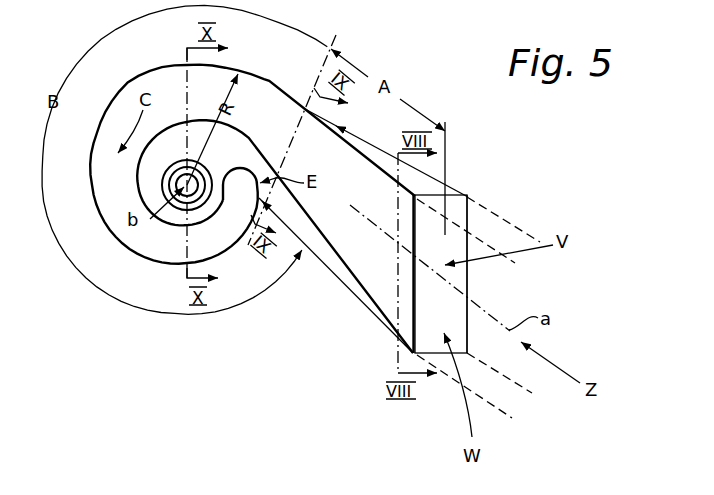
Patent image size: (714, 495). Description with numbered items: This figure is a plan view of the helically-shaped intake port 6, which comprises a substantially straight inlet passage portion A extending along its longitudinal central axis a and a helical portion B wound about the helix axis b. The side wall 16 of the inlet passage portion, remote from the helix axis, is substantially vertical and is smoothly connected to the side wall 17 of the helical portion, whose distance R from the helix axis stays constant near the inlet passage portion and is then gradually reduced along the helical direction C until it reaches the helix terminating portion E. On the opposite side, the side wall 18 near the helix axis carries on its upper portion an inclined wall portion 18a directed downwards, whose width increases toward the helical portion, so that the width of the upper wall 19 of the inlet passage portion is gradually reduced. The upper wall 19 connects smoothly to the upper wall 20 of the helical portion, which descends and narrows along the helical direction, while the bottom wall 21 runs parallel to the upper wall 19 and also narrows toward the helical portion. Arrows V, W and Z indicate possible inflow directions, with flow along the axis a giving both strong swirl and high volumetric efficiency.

The helically-shaped intake port 6 is at (468, 191).
The side wall of the inlet passage portion 16 is at (384, 151).
The side wall of the helical portion 17 is at (121, 89).
The side wall of the inlet passage portion 18 is at (350, 272).
The inclined wall portion 18a is at (312, 252).
The upper wall of the inlet passage portion 19 is at (373, 268).
The upper wall of the helical portion 20 is at (98, 200).
The bottom wall of the inlet passage portion 21 is at (469, 281).